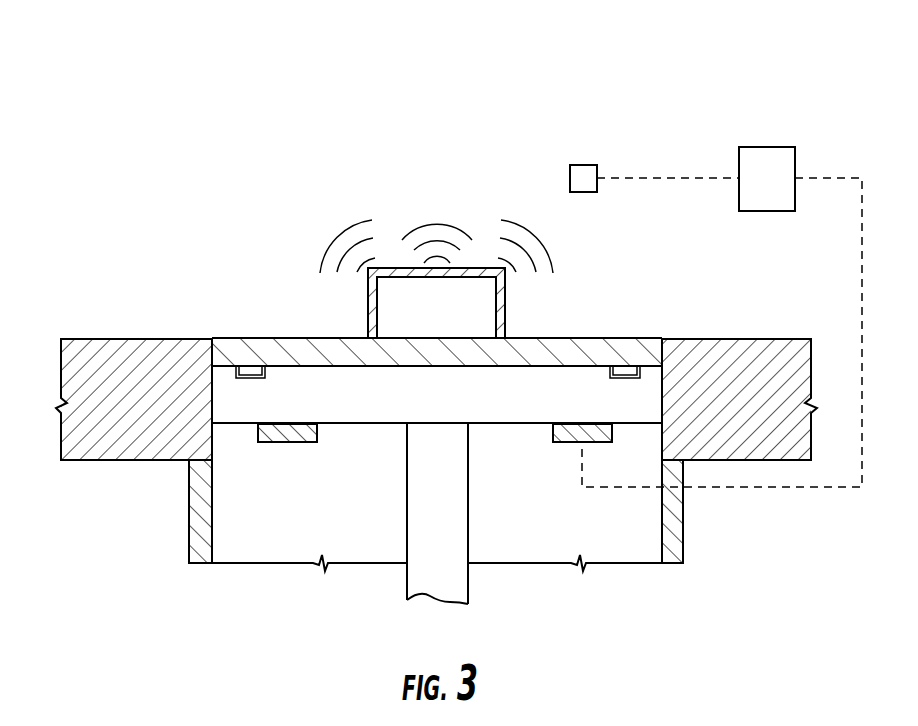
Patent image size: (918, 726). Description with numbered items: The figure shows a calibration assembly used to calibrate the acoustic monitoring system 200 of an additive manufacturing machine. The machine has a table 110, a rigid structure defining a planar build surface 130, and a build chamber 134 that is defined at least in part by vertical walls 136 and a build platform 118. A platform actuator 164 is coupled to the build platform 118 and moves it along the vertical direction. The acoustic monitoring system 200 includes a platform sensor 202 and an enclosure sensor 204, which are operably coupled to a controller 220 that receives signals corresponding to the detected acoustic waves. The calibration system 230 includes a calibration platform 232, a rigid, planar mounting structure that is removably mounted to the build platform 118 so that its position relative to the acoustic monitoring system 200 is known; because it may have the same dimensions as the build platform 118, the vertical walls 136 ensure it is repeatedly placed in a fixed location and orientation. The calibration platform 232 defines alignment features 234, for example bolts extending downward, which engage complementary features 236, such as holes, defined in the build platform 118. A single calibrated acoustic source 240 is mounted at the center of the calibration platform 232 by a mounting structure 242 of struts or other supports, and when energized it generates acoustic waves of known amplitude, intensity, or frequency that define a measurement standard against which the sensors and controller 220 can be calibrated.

The acoustic monitoring system 200 is at (707, 89).
The table 110 is at (63, 421).
The planar build surface 130 is at (75, 334).
The build platform 118 is at (457, 403).
The build chamber 134 is at (340, 538).
The vertical walls 136 is at (684, 517).
The platform actuator 164 is at (450, 528).
The platform sensor 202 is at (296, 443).
The enclosure sensor 204 is at (583, 165).
The controller 220 is at (788, 191).
The calibration system 230 is at (228, 290).
The calibration platform 232 is at (601, 351).
The alignment features 234 is at (250, 368).
The complementary features 236 is at (264, 386).
The calibrated acoustic source 240 is at (486, 268).
The mounting structure 242 is at (568, 333).